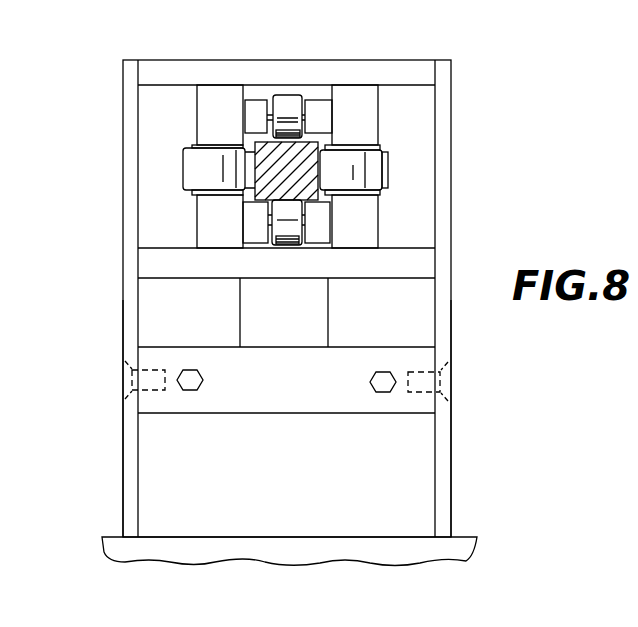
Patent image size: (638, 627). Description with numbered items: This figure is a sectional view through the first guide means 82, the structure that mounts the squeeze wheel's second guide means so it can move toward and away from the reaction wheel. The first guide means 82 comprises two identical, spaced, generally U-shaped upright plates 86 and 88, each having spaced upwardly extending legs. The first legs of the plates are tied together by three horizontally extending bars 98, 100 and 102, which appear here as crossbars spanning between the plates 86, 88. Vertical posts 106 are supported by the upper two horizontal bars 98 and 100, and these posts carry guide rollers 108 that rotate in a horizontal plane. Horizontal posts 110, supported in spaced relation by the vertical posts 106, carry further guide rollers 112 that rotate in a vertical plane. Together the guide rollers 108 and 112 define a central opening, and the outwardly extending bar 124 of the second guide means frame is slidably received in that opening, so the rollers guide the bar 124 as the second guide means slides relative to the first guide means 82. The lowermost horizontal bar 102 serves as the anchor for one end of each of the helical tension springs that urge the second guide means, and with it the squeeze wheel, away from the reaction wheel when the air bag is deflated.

The first guide means 82 is at (492, 189).
The upright plate 86 is at (132, 468).
The upright plate 88 is at (444, 470).
The horizontally extending bar 98 is at (395, 72).
The horizontally extending bar 100 is at (418, 268).
The horizontally extending bar 102 is at (302, 402).
The vertical post 106 is at (212, 88).
The guide roller 108 is at (187, 170).
The horizontal post 110 is at (253, 105).
The guide roller 112 is at (290, 103).
The outwardly extending bar 124 is at (298, 152).